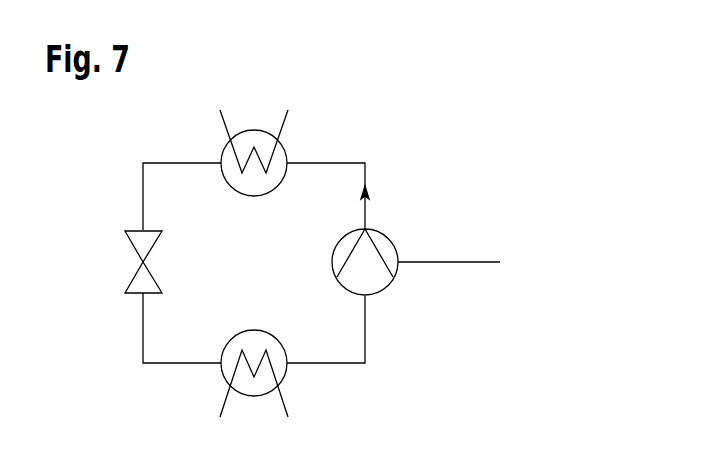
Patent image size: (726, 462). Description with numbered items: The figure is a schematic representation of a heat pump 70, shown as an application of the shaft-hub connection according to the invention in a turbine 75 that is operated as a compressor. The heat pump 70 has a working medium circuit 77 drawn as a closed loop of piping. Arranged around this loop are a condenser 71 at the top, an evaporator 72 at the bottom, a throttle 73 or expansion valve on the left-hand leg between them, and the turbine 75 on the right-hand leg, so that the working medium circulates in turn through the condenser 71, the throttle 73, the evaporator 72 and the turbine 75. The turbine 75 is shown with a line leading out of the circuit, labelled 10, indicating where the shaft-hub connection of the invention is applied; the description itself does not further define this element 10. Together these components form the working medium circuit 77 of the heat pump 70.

The heat pump 70 is at (402, 168).
The condenser 71 is at (255, 130).
The evaporator 72 is at (255, 330).
The throttle 73 is at (143, 262).
The turbine 75 is at (332, 263).
The drive shaft / connection 10 is at (453, 262).
The working medium circuit 77 is at (403, 358).